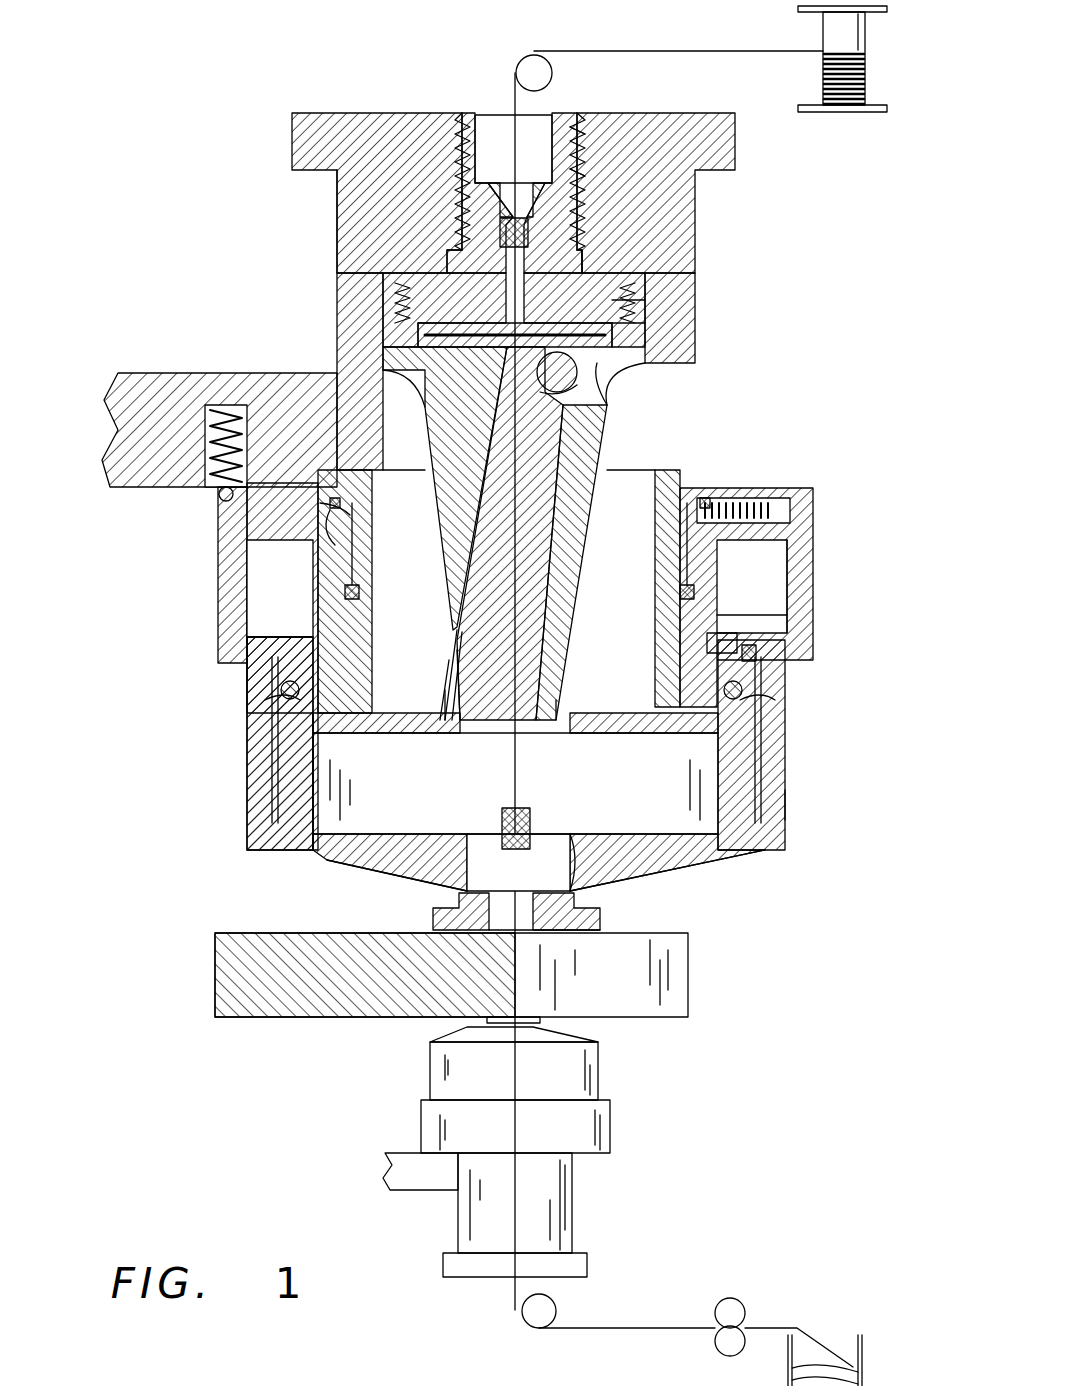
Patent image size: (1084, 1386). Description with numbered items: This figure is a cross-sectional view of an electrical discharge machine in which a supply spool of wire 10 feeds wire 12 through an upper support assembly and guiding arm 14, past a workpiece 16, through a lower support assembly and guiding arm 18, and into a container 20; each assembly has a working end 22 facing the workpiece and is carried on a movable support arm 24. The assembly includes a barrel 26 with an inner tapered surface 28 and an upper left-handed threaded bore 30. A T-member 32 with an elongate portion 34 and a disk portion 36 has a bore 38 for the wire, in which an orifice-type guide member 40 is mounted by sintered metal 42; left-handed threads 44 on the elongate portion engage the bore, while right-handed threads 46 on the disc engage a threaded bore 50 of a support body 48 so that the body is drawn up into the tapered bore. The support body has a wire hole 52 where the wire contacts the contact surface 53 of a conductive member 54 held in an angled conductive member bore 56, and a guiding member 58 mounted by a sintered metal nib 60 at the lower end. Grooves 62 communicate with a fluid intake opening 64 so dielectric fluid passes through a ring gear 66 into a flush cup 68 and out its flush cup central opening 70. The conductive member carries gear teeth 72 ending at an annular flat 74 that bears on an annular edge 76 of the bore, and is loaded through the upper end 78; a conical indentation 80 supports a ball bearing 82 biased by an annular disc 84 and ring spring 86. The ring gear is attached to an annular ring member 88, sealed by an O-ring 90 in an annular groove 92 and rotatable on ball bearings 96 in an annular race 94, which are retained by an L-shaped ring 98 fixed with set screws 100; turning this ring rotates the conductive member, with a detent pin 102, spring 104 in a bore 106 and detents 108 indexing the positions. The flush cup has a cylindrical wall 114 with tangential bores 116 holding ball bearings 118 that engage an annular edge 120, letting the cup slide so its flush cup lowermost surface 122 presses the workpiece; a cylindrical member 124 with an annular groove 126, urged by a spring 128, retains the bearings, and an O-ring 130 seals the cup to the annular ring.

The supply spool of wire 10 is at (866, 40).
The wire 12 is at (700, 50).
The upper support assembly and guiding arm 14 is at (238, 300).
The workpiece 16 is at (680, 972).
The lower support assembly and guiding arm 18 is at (612, 1092).
The container 20 is at (865, 1340).
The working end 22 is at (700, 870).
The support arm 24 is at (125, 373).
The barrel 26 is at (695, 272).
The inner tapered surface 28 is at (383, 378).
The upper left-handed threaded bore 30 is at (462, 113).
The T-member 32 is at (580, 178).
The elongate portion 34 is at (556, 115).
The disk portion 36 is at (612, 272).
The bore 38 is at (492, 128).
The orifice-type guide member 40 is at (500, 232).
The sintered metal 42 is at (488, 200).
The left-handed threads 44 is at (584, 150).
The right-handed threads 46 is at (600, 310).
The support body 48 is at (585, 515).
The threaded bore 50 is at (600, 342).
The wire hole 52 is at (430, 338).
The contact surface 53 is at (600, 478).
The conductive member 54 is at (360, 585).
The conductive member bore 56 is at (445, 533).
The guiding member 58 is at (440, 868).
The sintered metal nib 60 is at (500, 816).
The grooves 62 is at (700, 552).
The fluid intake opening 64 is at (680, 412).
The ring gear 66 is at (590, 712).
The flush cup 68 is at (748, 855).
The flush cup central opening 70 is at (575, 901).
The gear teeth 72 is at (462, 735).
The annular flat 74 is at (432, 685).
The annular edge 76 is at (500, 692).
The upper end 78 is at (578, 364).
The conical indentation 80 is at (470, 404).
The ball bearing 82 is at (562, 384).
The annular disc 84 is at (430, 305).
The ring spring 86 is at (400, 295).
The annular ring member 88 is at (810, 620).
The O-ring 90 is at (705, 615).
The annular groove 92 is at (703, 582).
The annular race 94 is at (345, 565).
The ball bearings 96 is at (335, 535).
The L-shaped ring 98 is at (222, 620).
The set screws 100 is at (740, 490).
The detent pin 102 is at (215, 500).
The spring 104 is at (205, 440).
The bore 106 is at (220, 408).
The detents 108 is at (800, 500).
The cylindrical wall 114 is at (770, 805).
The tangential bores 116 is at (292, 720).
The ball bearings 118 is at (300, 700).
The annular edge 120 is at (740, 695).
The flush cup lowermost surface 122 is at (565, 942).
The cylindrical member 124 is at (255, 822).
The annular groove 126 is at (790, 680).
The spring 128 is at (775, 770).
The O-ring 130 is at (268, 740).